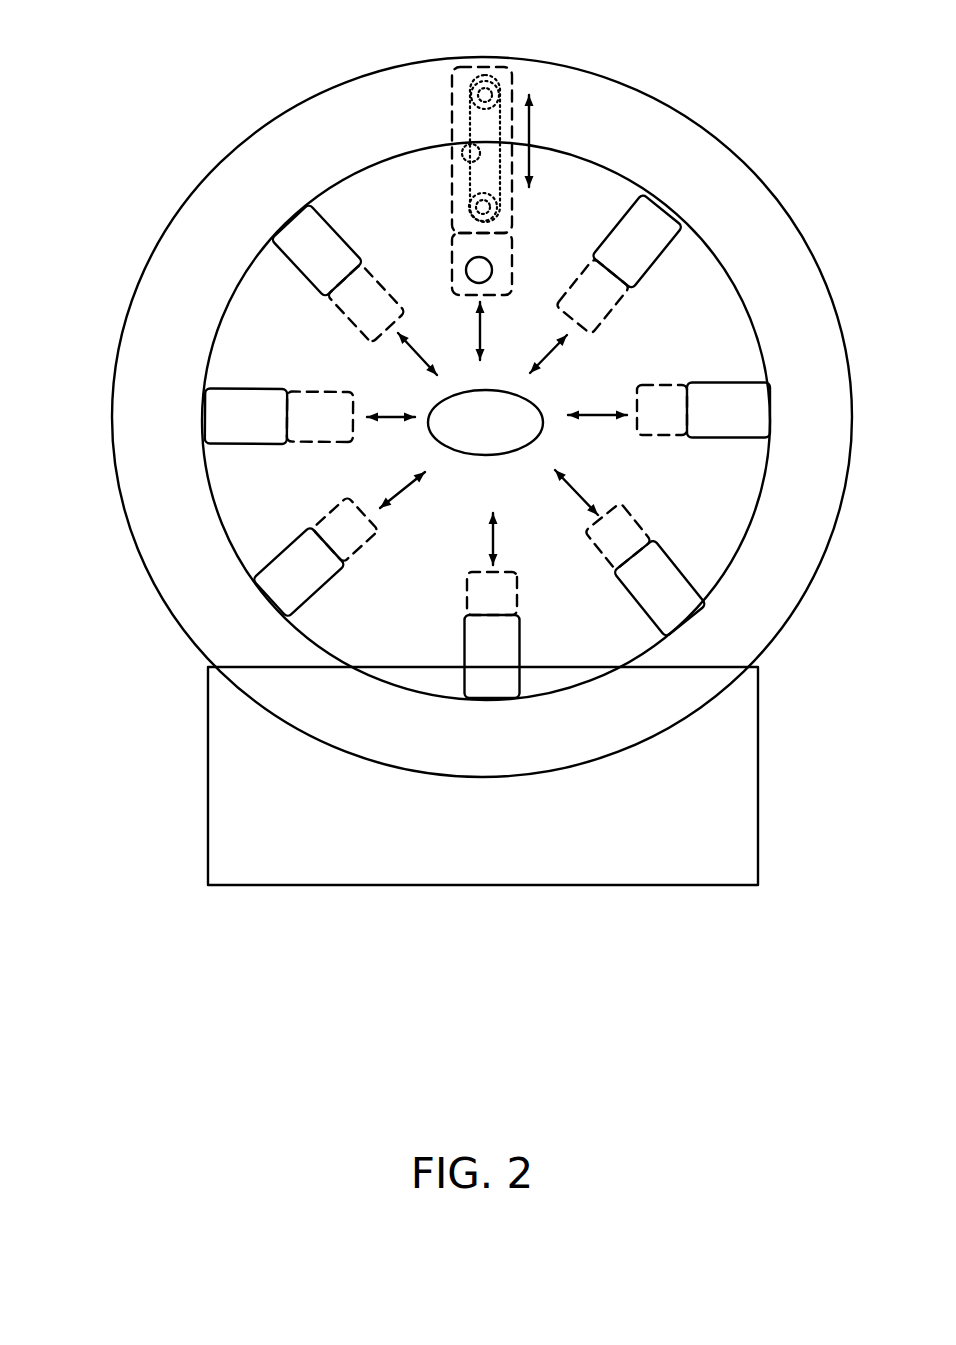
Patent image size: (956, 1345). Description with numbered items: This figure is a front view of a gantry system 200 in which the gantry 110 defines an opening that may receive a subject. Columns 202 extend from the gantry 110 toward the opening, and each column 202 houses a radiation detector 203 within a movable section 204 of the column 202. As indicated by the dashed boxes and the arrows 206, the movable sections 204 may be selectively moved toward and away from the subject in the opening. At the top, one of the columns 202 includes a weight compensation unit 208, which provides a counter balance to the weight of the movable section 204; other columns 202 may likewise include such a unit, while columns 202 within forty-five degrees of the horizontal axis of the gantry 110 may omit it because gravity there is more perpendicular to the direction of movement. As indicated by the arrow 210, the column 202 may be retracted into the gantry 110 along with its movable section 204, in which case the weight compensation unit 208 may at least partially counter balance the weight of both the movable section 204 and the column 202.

The gantry 110 is at (137, 290).
The processing system 200 is at (449, 1146).
The column 202 is at (487, 410).
The radiation detector 203 is at (460, 262).
The movable section 204 is at (481, 415).
The arrows 206 is at (466, 433).
The weight compensation unit 208 is at (472, 88).
The arrow 210 is at (533, 128).